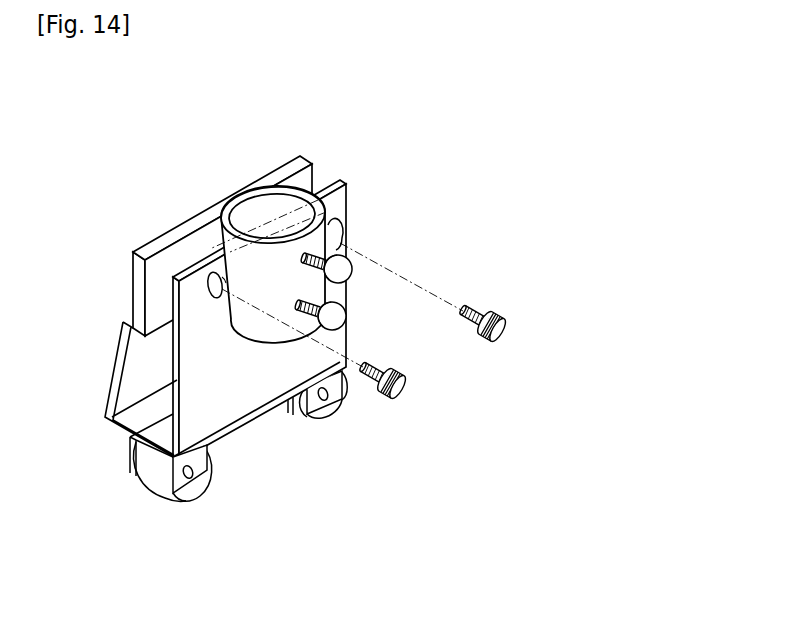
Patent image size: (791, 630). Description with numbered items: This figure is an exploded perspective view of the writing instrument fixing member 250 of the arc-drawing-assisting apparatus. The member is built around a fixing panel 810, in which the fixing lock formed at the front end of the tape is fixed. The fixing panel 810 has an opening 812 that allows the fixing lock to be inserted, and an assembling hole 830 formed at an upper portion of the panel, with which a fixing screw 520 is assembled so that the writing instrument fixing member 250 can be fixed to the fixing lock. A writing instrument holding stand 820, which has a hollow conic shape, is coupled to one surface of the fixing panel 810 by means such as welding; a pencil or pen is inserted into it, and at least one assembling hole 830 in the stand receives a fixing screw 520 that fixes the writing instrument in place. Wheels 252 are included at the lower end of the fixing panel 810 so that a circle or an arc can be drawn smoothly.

The writing instrument fixing member 250 is at (394, 125).
The wheels 252 is at (338, 412).
The fixing screw 520 is at (511, 331).
The fixing panel 810 is at (140, 290).
The opening 812 is at (133, 367).
The writing instrument holding stand 820 is at (323, 206).
The assembling hole 830 is at (226, 272).